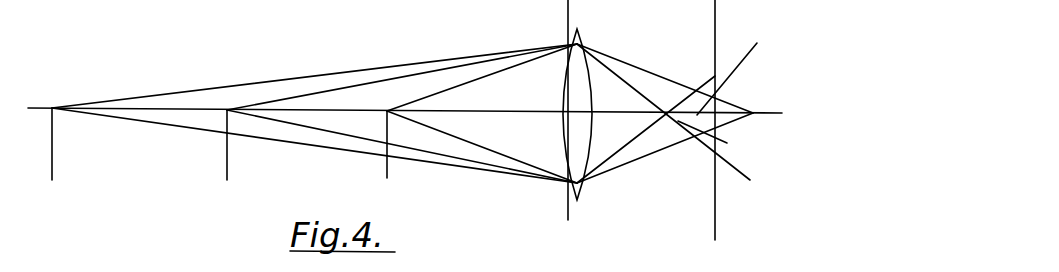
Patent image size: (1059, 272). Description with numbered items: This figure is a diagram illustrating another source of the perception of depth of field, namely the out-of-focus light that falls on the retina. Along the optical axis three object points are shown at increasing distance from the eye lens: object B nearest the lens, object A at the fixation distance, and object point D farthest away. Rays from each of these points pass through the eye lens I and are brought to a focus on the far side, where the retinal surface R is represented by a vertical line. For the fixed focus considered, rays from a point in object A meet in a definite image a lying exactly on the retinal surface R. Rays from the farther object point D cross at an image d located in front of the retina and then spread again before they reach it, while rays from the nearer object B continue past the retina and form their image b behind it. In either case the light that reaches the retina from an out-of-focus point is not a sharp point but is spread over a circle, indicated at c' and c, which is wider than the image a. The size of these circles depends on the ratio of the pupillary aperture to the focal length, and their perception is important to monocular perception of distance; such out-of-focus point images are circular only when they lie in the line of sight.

The object point D is at (312, 128).
The object A is at (401, 125).
The object B is at (480, 125).
The objective lens I is at (577, 198).
The image d is at (664, 108).
The image a is at (669, 113).
The image b is at (725, 95).
The intersection of A ray cone with screen R c is at (743, 112).
The circle c' is at (716, 105).
The retinal surface R is at (717, 228).